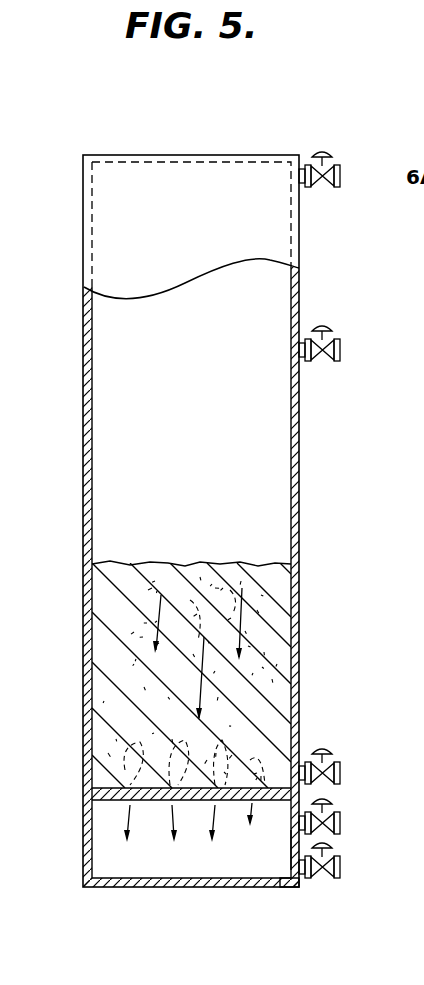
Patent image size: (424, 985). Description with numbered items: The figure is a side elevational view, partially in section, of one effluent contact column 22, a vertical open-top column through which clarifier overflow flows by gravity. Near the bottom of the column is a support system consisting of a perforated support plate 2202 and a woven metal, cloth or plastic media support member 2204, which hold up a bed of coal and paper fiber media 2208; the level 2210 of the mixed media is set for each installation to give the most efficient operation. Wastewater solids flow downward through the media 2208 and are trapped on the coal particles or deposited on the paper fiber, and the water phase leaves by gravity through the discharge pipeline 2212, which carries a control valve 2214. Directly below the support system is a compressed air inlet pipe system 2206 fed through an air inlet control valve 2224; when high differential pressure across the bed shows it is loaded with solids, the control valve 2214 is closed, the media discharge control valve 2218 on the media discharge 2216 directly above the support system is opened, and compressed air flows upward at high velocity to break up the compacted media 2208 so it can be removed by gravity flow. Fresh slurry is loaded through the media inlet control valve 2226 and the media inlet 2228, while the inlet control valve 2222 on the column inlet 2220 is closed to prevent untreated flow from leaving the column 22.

The effluent contact column 22 is at (81, 369).
The perforated support plate 2202 is at (112, 803).
The media support member 2204 is at (98, 790).
The compressed air inlet pipe system 2206 is at (291, 850).
The coal and paper fiber media 2208 is at (182, 695).
The level of the mixed media 2210 is at (200, 562).
The discharge pipeline 2212 is at (300, 887).
The control valve 2214 is at (328, 848).
The media discharge 2216 is at (306, 765).
The media discharge control valve 2218 is at (329, 751).
The column inlet 2220 is at (303, 186).
The inlet control valve 2222 is at (324, 146).
The air inlet control valve 2224 is at (329, 802).
The media inlet control valve 2226 is at (303, 362).
The media inlet 2228 is at (325, 327).